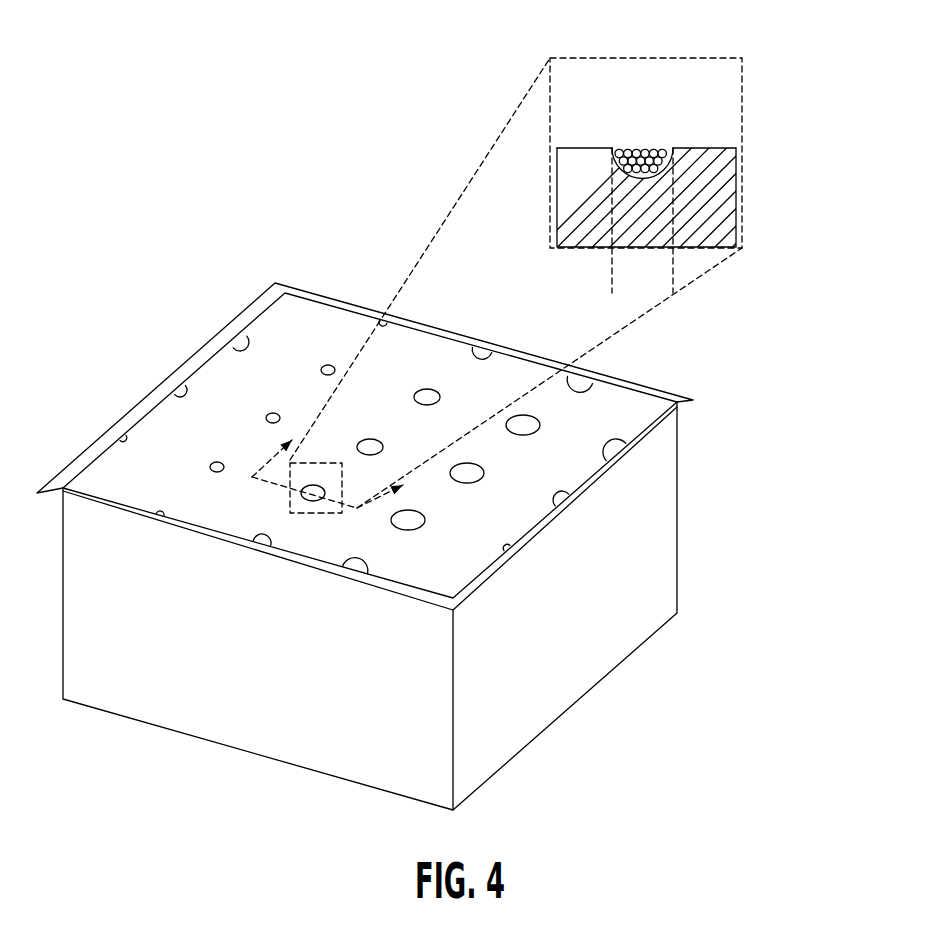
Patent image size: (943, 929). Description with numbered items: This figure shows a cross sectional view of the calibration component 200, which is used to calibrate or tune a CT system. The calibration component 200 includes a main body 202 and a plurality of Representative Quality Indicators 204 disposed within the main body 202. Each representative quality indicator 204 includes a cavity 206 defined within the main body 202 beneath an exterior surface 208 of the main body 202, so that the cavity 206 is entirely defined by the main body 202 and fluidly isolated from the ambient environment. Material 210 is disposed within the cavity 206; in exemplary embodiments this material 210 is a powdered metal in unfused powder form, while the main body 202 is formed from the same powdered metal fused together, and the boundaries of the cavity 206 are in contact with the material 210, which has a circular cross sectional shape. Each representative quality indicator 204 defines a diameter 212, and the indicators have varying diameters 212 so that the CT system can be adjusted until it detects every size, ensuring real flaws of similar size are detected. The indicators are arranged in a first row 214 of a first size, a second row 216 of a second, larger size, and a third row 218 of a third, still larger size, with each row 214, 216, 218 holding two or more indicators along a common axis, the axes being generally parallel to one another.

The calibration component 200 is at (135, 203).
The main body 202 is at (720, 186).
The Representative Quality Indicator 204 is at (599, 129).
The cavity 206 is at (662, 145).
The exterior surface 208 is at (667, 542).
The material 210 is at (640, 148).
The diameter 212 is at (672, 280).
The first row 214 is at (338, 335).
The second row 216 is at (430, 362).
The third row 218 is at (515, 388).